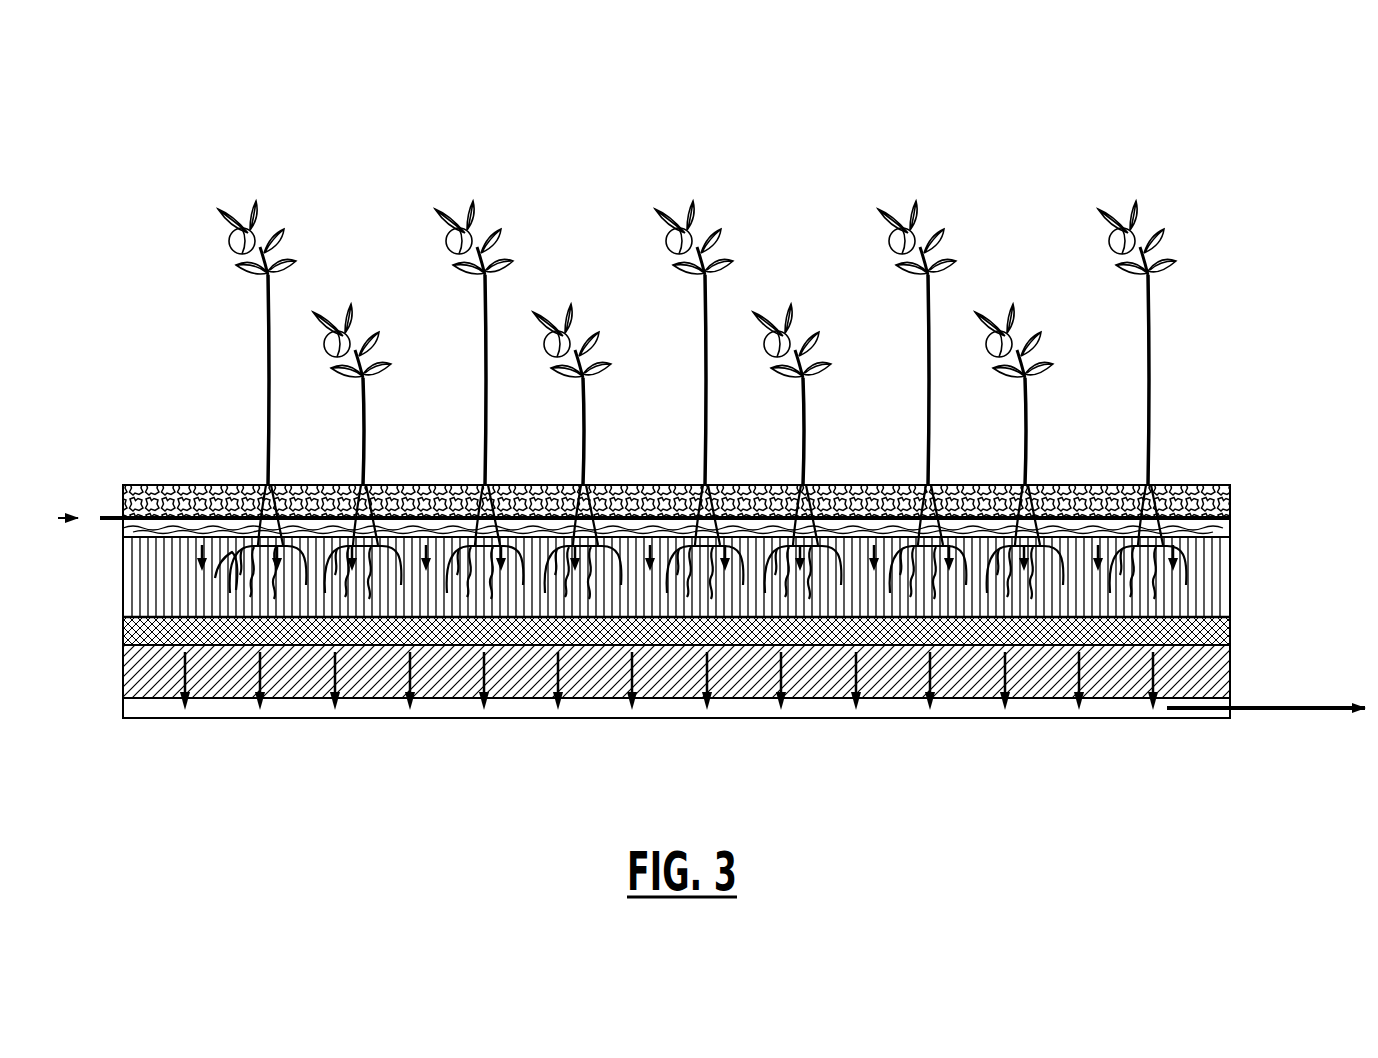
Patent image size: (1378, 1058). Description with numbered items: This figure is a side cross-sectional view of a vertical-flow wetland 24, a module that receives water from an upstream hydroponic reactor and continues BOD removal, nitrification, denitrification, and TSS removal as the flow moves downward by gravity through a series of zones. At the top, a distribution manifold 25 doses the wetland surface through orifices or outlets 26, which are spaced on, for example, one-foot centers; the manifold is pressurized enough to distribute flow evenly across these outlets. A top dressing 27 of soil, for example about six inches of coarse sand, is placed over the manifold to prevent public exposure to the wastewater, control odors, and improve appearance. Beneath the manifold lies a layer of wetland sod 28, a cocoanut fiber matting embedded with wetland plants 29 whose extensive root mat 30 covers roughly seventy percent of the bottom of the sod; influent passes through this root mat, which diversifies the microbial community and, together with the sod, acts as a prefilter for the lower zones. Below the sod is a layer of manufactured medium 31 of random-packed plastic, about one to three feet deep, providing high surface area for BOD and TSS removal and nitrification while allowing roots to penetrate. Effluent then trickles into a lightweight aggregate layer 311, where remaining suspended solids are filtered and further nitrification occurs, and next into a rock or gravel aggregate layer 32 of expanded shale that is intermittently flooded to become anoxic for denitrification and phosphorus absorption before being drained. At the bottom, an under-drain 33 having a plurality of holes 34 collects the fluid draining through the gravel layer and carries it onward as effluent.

The vertical-flow wetland 24 is at (973, 125).
The distribution manifold 25 is at (111, 517).
The orifices or outlets 26 is at (202, 545).
The top dressing 27 is at (1207, 482).
The wetland sod 28 is at (1236, 508).
The wetland plants 29 is at (1147, 417).
The root mat 30 is at (215, 578).
The manufactured medium 31 is at (1236, 560).
The lightweight aggregate layer 311 is at (1232, 632).
The rock or gravel aggregate layer 32 is at (1236, 680).
The under-drain 33 is at (121, 704).
The holes 34 is at (555, 698).